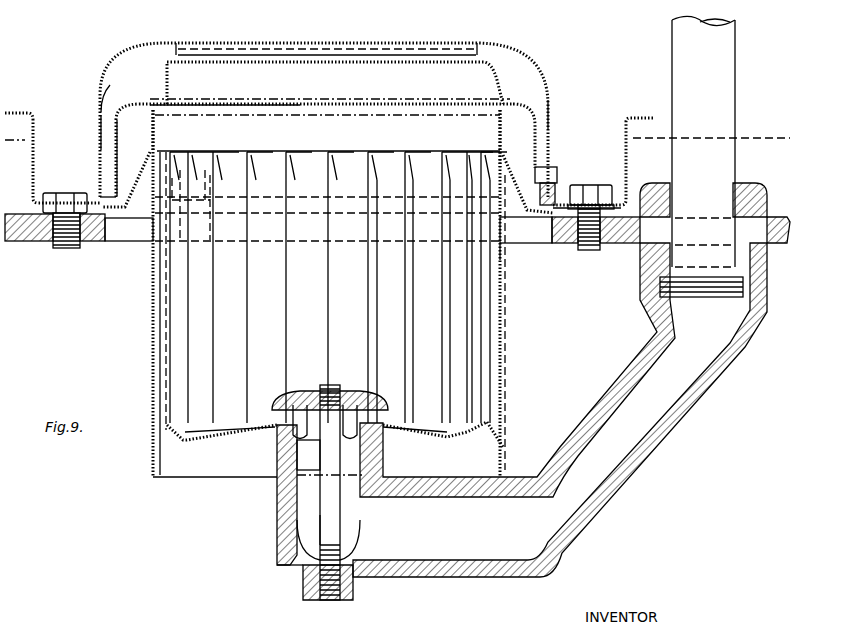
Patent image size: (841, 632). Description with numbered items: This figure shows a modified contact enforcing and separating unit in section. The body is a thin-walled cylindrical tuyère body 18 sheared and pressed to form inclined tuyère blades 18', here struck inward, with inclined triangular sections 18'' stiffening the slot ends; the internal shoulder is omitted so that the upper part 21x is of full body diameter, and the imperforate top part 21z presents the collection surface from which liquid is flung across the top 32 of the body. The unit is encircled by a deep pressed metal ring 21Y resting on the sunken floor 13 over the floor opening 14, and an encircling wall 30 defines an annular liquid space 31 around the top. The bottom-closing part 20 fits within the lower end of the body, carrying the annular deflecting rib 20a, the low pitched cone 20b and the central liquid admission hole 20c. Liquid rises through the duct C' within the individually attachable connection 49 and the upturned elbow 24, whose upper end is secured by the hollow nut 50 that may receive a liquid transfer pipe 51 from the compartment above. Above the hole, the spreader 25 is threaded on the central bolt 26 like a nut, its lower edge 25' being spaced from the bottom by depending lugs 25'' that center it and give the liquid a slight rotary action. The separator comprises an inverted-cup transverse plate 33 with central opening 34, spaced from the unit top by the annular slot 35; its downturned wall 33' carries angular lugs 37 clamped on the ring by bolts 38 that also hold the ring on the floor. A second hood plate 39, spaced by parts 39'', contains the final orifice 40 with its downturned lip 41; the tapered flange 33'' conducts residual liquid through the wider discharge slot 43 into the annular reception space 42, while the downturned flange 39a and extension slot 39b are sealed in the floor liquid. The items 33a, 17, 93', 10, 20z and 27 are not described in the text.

The second hood plate 39 is at (324, 110).
The downturned lip 41 is at (178, 46).
The second liquid discharge slot 43 is at (312, 48).
The final orifice 40 is at (382, 46).
The tapered flange and collecting surface 33'' is at (335, 83).
The transverse ring or plate 33 is at (299, 119).
The annular liquid reception space 42 is at (524, 108).
The annular slot 35 is at (225, 104).
The central opening 34 is at (330, 90).
The top of unit body 32 is at (552, 103).
The downturned flange of plate 39 39a is at (100, 100).
The extension slot 39b is at (108, 128).
The downturned wall of plate 33 33' is at (130, 158).
The inner shell flange 33a is at (128, 184).
The encircling wall 30 is at (34, 145).
The annular space 31 is at (590, 170).
The angular lugs 37 is at (600, 160).
The bolts 38 is at (590, 190).
The floor 13 is at (30, 242).
The floor opening 14 is at (118, 240).
The plate block 17 is at (526, 230).
The tuyère body 18 is at (332, 293).
The imperforate top part 21z is at (157, 130).
The upper part of unit body 21x is at (477, 138).
The rim flange 93' is at (528, 170).
The pressed metal ring 21Y is at (540, 165).
The spacing parts 39'' is at (564, 170).
The tuyère blades 18' is at (331, 291).
The canister 10 is at (282, 318).
The bottom-closing part 20 is at (248, 440).
The low pitched cone 20b is at (236, 428).
The annular deflecting rib 20a is at (188, 425).
The inclined triangular sections 18'' is at (518, 337).
The spreader 25 is at (330, 480).
The lower edge of spreader 25' is at (373, 413).
The depending lugs 25'' is at (287, 404).
The central liquid admission hole 20c is at (331, 457).
The upturned elbow 24 is at (285, 470).
The tube bottom 20z is at (292, 485).
The tube base nut 27 is at (282, 520).
The central bolt 26 is at (330, 514).
The individually attachable connection 49 is at (642, 458).
The liquid supply duct C' is at (432, 523).
The hollow nut 50 is at (757, 182).
The liquid transfer pipe 51 is at (720, 110).